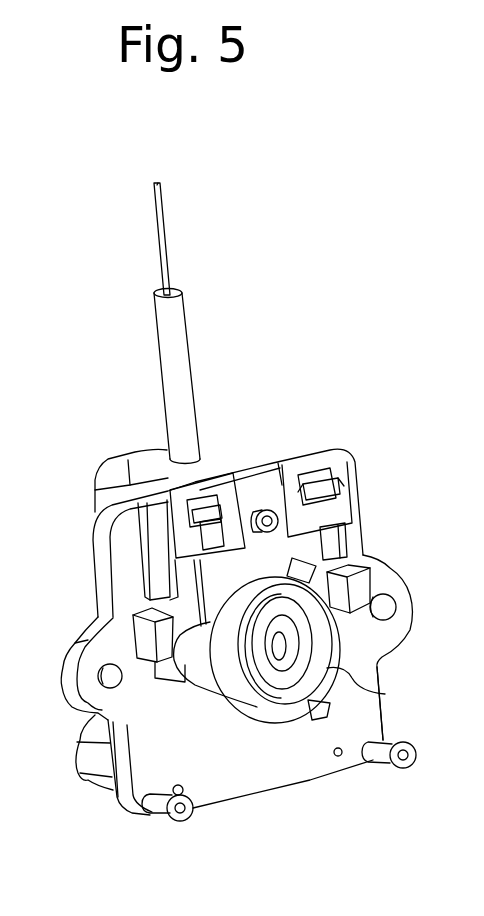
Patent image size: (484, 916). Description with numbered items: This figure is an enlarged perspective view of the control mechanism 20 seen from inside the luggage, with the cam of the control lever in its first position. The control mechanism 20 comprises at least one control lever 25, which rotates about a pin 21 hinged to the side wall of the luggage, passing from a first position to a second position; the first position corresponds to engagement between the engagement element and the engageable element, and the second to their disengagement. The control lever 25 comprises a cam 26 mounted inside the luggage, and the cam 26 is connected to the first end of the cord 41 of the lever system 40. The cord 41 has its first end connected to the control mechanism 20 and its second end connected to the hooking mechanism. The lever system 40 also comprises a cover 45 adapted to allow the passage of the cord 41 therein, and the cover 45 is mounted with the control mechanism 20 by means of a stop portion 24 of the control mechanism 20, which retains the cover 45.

The control mechanism 20 is at (237, 758).
The pin 21 is at (279, 645).
The stop portion 24 is at (176, 495).
The control lever 25 is at (92, 758).
The cam 26 is at (385, 694).
The lever system 40 is at (157, 227).
The cord 41 is at (167, 255).
The cover 45 is at (170, 362).